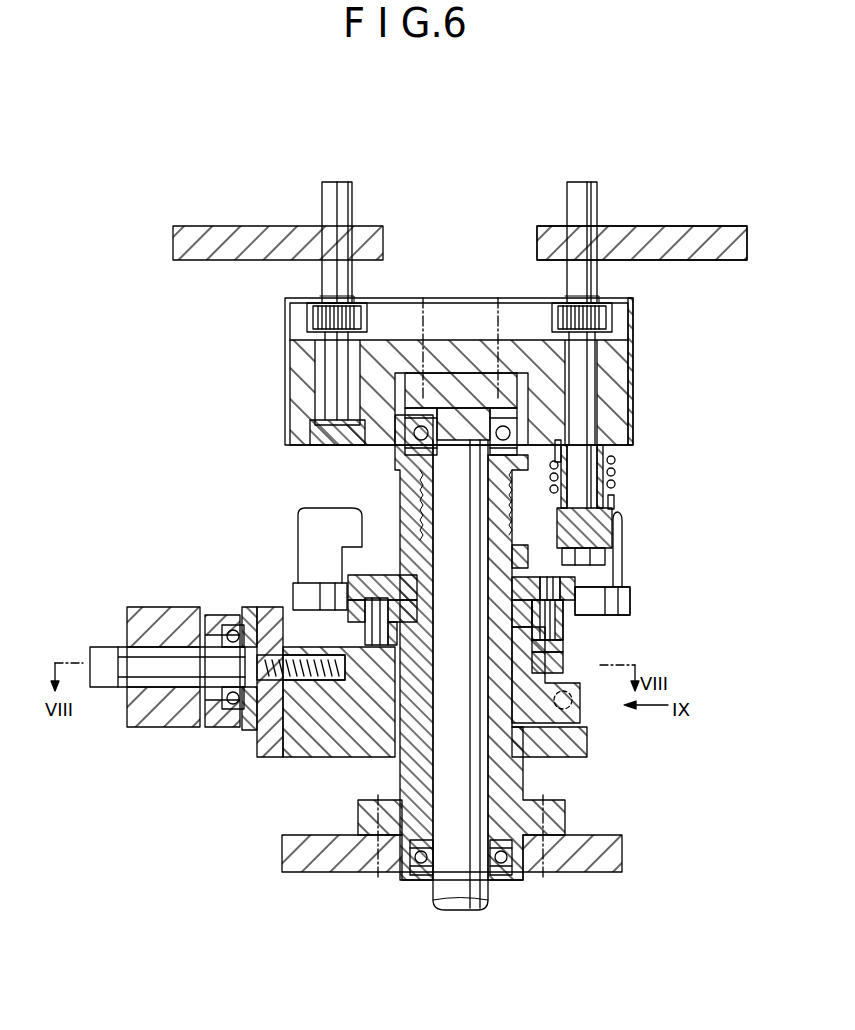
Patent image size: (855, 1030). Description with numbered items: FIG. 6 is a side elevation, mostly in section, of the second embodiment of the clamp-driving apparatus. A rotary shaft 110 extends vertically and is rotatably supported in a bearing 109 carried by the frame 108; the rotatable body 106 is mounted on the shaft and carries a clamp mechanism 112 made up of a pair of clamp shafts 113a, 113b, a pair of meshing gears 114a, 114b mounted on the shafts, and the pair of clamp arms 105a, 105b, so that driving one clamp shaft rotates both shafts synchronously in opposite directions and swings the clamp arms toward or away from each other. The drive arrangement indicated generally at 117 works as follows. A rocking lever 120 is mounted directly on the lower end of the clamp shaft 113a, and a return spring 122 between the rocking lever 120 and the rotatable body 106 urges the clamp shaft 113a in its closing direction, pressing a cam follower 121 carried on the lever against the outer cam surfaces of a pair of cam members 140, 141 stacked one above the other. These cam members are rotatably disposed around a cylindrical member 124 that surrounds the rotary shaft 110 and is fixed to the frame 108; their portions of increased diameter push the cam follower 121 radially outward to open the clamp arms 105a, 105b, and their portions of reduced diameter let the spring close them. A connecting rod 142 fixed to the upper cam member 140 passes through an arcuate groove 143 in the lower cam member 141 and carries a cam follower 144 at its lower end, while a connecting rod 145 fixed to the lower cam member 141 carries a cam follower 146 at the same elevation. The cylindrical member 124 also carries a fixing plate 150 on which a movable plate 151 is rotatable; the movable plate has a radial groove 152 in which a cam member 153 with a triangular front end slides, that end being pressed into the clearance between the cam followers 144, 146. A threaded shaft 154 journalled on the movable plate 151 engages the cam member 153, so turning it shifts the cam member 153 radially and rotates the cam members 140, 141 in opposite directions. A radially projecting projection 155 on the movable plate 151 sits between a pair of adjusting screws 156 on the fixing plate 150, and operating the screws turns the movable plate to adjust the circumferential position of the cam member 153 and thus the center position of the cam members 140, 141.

The clamp arm 105a is at (728, 261).
The clamp arm 105b is at (173, 236).
The rotatable body 106 is at (636, 393).
The frame 108 is at (594, 873).
The bearing 109 is at (503, 884).
The rotary shaft 110 is at (457, 888).
The clamp mechanism 112 is at (668, 228).
The clamp shaft 113a is at (580, 181).
The clamp shaft 113b is at (330, 181).
The gear 114a is at (614, 320).
The gear 114b is at (308, 321).
The drive mechanism 117 is at (626, 564).
The rocking lever 120 is at (298, 520).
The cam follower 121 is at (293, 590).
The return spring 122 is at (615, 482).
The cylindrical member 124 is at (500, 592).
The cam member 140 is at (580, 584).
The cam member 141 is at (566, 630).
The connecting rod 142 is at (565, 641).
The arcuate groove 143 is at (522, 613).
The cam follower 144 is at (564, 665).
The connecting rod 145 is at (365, 630).
The cam follower 146 is at (396, 683).
The fixing plate 150 is at (285, 758).
The movable plate 151 is at (262, 742).
The radial groove 152 is at (320, 757).
The cam member 153 is at (383, 757).
The threaded shaft 154 is at (140, 672).
The projection 155 is at (587, 740).
The adjusting screw 156 is at (573, 702).